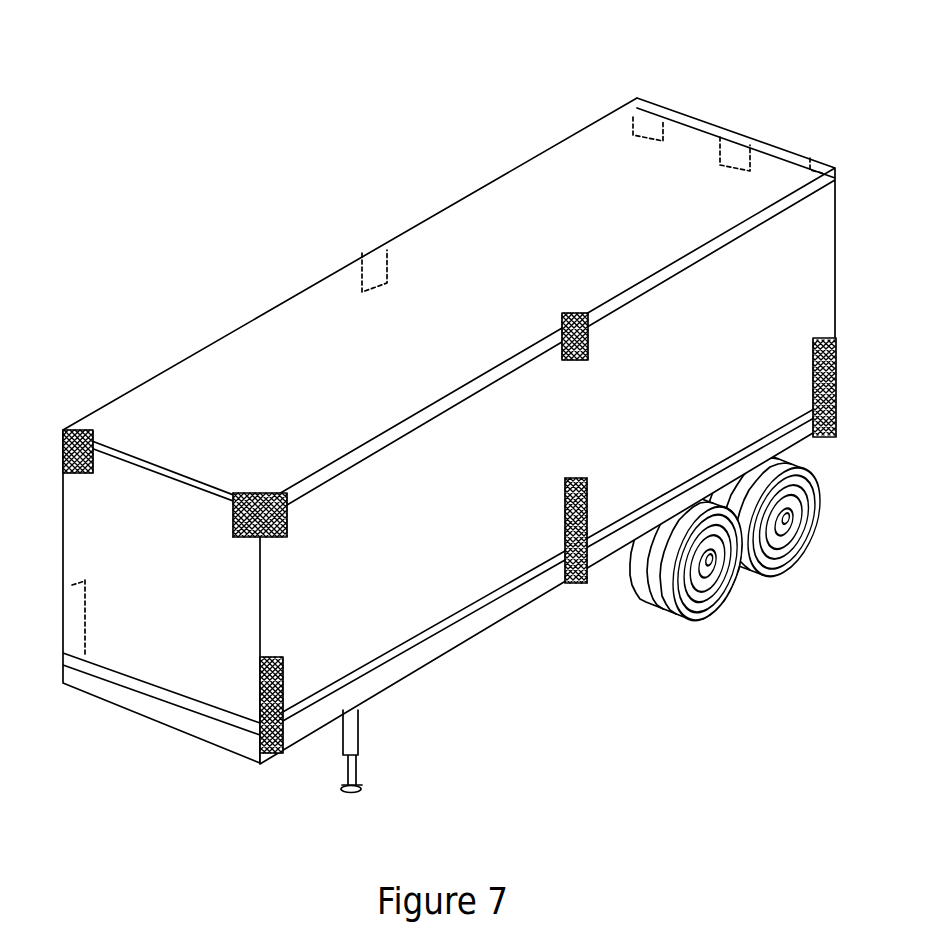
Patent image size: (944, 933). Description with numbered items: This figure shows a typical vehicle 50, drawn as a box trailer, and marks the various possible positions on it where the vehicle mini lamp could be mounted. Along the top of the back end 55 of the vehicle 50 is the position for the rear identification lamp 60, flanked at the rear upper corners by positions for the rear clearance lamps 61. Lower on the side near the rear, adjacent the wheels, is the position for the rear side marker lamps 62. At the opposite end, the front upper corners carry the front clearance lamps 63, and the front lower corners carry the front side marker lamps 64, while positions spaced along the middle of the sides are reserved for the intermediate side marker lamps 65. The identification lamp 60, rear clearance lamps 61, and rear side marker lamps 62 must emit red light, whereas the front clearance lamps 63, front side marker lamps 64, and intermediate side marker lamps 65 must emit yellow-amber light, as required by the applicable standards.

The vehicle 50 is at (457, 427).
The back end 55 is at (837, 260).
The rear identification lamp 60 is at (733, 131).
The rear clearance lamps 61 is at (647, 93).
The rear side marker lamps 62 is at (835, 437).
The front clearance lamps 63 is at (63, 430).
The front side marker lamps 64 is at (263, 493).
The intermediate side marker lamps 65 is at (377, 248).